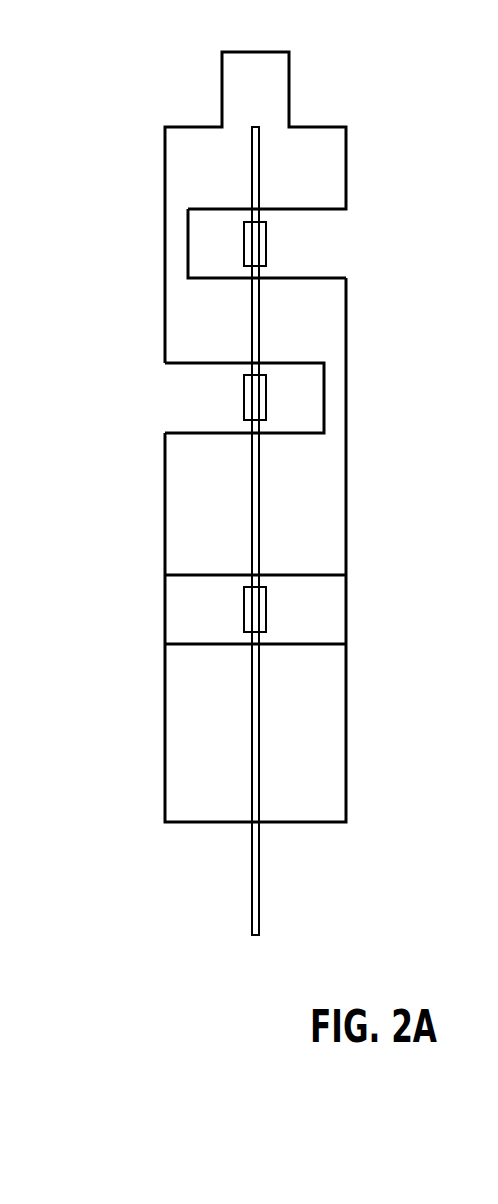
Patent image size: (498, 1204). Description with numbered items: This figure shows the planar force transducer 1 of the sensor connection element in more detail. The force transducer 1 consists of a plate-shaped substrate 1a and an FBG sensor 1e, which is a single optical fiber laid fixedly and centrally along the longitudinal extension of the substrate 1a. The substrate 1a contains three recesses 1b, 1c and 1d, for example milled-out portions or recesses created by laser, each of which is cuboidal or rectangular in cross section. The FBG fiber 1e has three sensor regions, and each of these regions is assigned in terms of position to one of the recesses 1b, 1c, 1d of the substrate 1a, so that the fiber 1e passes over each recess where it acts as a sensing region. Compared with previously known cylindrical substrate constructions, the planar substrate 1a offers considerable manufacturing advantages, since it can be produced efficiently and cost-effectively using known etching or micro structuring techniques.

The force transducer element 1 is at (106, 123).
The plate-shaped substrate 1a is at (327, 161).
The recess 1b is at (303, 612).
The recess 1c is at (303, 400).
The recess 1d is at (303, 246).
The FBG sensor 1e is at (255, 878).